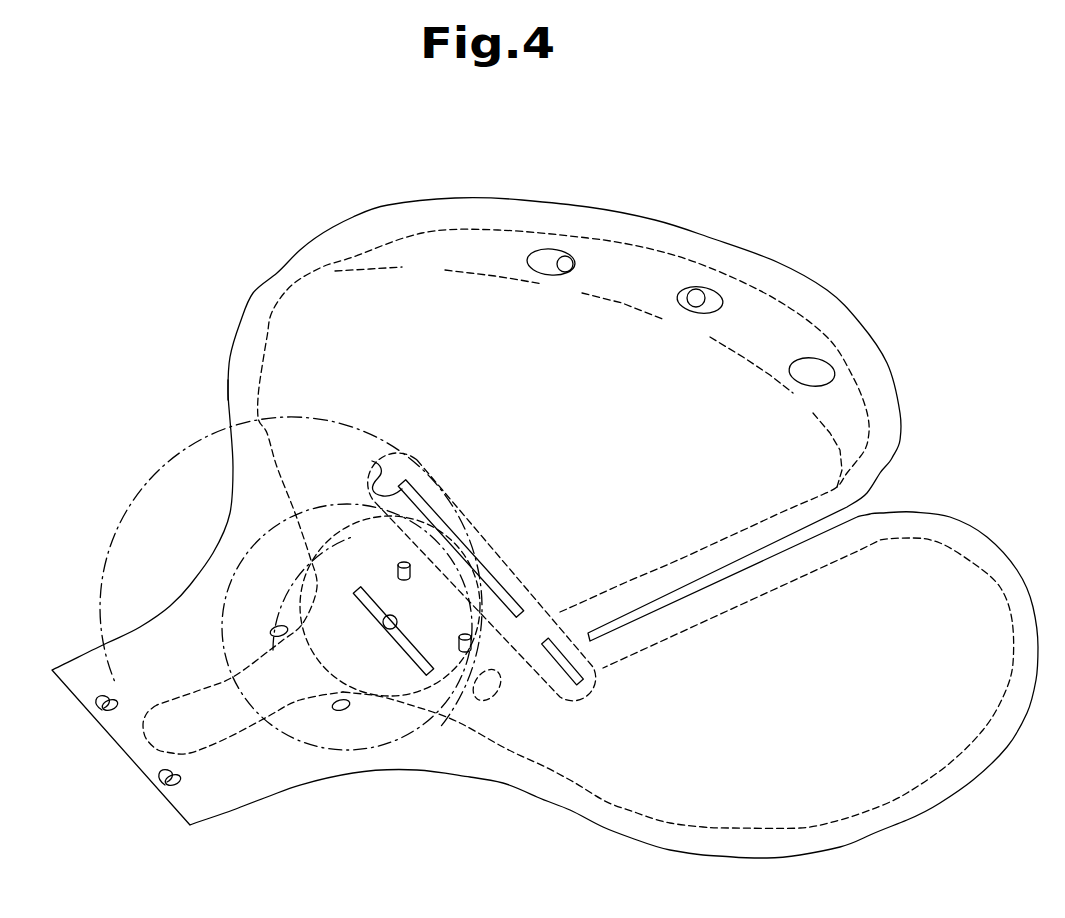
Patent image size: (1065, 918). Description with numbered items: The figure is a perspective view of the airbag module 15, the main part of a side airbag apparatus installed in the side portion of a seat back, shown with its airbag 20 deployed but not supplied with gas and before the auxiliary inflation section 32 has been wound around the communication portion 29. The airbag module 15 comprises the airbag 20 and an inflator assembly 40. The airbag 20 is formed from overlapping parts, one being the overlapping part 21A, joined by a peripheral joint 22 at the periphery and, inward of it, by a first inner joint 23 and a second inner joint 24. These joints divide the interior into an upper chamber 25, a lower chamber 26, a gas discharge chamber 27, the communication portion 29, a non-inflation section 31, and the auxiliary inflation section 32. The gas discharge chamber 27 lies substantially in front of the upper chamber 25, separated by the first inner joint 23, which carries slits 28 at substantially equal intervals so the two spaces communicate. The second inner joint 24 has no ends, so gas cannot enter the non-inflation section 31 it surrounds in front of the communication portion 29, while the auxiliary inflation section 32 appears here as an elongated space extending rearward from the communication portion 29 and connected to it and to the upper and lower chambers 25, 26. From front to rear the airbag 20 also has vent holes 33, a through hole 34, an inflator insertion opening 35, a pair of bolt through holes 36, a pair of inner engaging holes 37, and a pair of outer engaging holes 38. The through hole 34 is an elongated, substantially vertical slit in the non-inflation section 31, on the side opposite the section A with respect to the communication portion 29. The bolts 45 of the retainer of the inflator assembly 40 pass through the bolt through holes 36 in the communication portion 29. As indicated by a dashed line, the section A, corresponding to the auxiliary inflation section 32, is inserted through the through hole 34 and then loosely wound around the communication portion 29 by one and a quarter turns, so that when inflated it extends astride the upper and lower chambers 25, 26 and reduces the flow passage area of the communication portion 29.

The airbag module 15 is at (166, 289).
The airbag 20 is at (276, 272).
The overlapping part 21A is at (245, 358).
The peripheral joint 22 is at (911, 538).
The first inner joint 23 is at (495, 277).
The second inner joint 24 is at (490, 543).
The upper chamber 25 is at (569, 449).
The lower chamber 26 is at (793, 708).
The gas discharge chamber 27 is at (773, 354).
The slits 28 is at (445, 270).
The communication portion 29 is at (501, 685).
The non-inflation section 31 is at (490, 582).
The auxiliary inflation section 32 is at (243, 723).
The vent holes 33 is at (680, 300).
The through hole 34 is at (371, 470).
The inflator insertion opening 35 is at (384, 621).
The bolt through holes 36 is at (459, 649).
The inner engaging holes 37 is at (346, 712).
The outer engaging holes 38 is at (97, 712).
The inflator assembly 40 is at (291, 588).
The bolts 45 is at (397, 568).
The section A is at (247, 797).